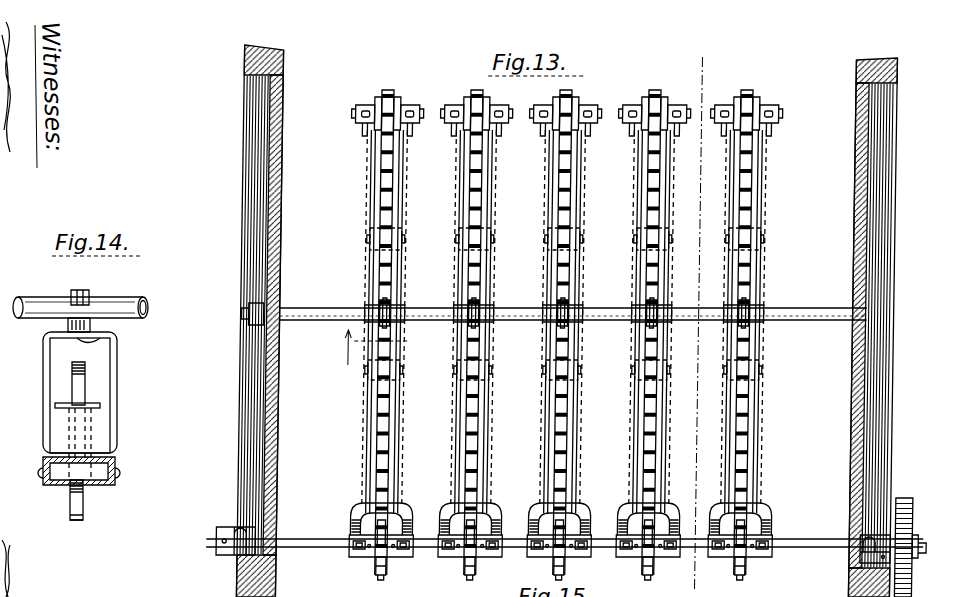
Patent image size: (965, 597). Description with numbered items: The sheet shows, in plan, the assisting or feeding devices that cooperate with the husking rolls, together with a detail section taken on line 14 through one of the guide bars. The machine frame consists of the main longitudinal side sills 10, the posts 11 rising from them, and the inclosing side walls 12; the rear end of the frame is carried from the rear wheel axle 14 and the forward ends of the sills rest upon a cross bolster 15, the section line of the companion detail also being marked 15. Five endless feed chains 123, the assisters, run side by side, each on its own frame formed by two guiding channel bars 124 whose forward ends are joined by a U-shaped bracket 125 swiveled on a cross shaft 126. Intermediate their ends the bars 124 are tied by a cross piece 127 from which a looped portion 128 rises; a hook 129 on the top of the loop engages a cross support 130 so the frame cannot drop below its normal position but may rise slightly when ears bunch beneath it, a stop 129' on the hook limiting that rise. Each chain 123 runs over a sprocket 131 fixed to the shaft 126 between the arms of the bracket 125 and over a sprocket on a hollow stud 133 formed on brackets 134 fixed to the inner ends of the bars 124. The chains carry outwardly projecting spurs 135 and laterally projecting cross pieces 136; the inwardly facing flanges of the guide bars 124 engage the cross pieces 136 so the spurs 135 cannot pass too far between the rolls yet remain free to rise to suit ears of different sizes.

In FIG. 13, the main longitudinal side sill 10 is at (257, 167).
In FIG. 13, the post 11 is at (254, 63).
In FIG. 13, the inclosing side wall 12 is at (278, 449).
In FIG. 13, the rear wheel axle 14 is at (377, 347).
In FIG. 13, the cross bolster 15 is at (712, 55).
In FIG. 14, the feed chain 123 is at (83, 487).
In FIG. 13, the feed chain 123 is at (473, 441).
In FIG. 14, the guiding channel bar 124 is at (118, 480).
In FIG. 13, the guiding channel bar 124 is at (373, 384).
In FIG. 13, the U-shaped bracket 125 is at (356, 515).
In FIG. 13, the cross shaft 126 is at (321, 548).
In FIG. 14, the cross piece 127 is at (100, 453).
In FIG. 14, the looped portion 128 is at (117, 370).
In FIG. 13, the looped portion 128 is at (371, 306).
In FIG. 14, the hook 129 is at (109, 287).
In FIG. 13, the hook 129 is at (584, 303).
In FIG. 14, the stop 129' is at (125, 334).
In FIG. 14, the cross support 130 is at (148, 308).
In FIG. 13, the cross support 130 is at (298, 305).
In FIG. 13, the sprocket 131 is at (470, 573).
In FIG. 13, the hollow stud 133 is at (355, 119).
In FIG. 13, the bracket 134 is at (410, 108).
In FIG. 14, the spur 135 is at (80, 380).
In FIG. 13, the spur 135 is at (562, 93).
In FIG. 14, the cross piece 136 is at (100, 405).
In FIG. 13, the cross piece 136 is at (552, 246).